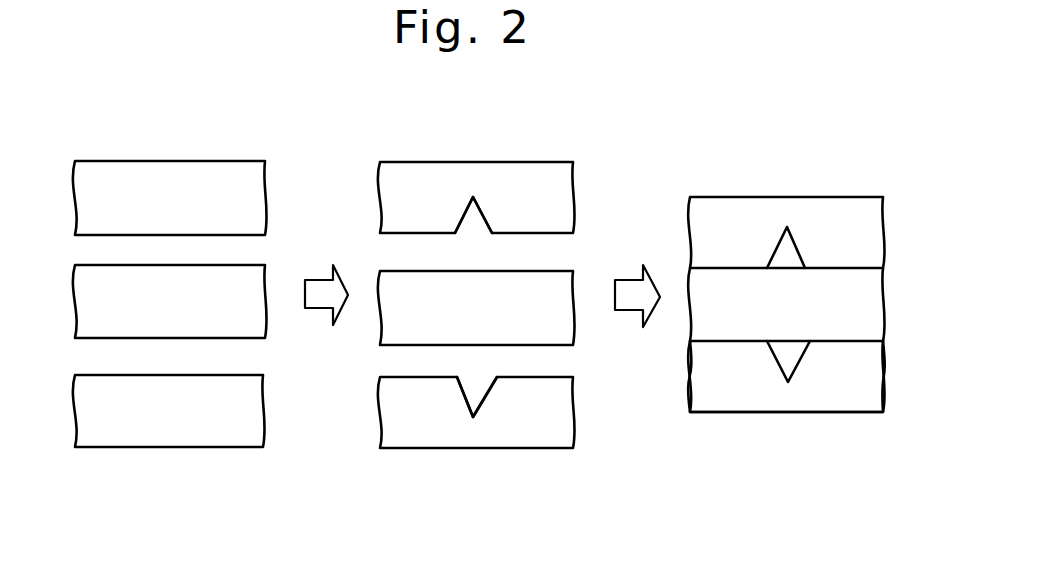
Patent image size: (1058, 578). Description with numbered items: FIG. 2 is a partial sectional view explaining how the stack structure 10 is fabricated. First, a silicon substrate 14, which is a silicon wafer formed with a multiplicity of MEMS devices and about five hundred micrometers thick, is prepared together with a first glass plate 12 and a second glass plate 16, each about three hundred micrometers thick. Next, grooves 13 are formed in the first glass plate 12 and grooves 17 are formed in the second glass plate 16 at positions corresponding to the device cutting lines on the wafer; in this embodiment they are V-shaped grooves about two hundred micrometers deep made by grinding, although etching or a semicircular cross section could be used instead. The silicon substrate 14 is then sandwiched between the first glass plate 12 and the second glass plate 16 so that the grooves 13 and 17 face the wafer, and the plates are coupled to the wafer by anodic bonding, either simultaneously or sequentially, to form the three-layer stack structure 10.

The stack structure 10 is at (745, 170).
The first glass plate 12 is at (182, 161).
The grooves 13 is at (472, 223).
The silicon substrate 14 is at (258, 266).
The second glass plate 16 is at (265, 410).
The grooves 17 is at (476, 388).